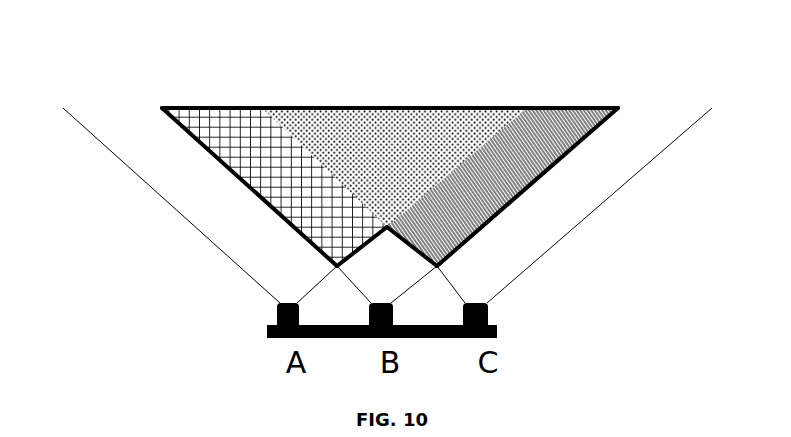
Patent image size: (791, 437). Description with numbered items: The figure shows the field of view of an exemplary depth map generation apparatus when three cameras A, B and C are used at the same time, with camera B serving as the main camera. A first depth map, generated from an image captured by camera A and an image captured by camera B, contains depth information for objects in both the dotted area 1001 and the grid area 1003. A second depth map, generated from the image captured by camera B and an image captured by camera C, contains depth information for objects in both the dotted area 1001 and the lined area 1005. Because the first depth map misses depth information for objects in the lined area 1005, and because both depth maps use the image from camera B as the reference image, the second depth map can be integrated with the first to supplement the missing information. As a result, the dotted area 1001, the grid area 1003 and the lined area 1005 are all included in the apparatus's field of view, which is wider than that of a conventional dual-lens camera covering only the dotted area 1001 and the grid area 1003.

The dotted area 1001 is at (413, 125).
The grid area 1003 is at (220, 105).
The lined area 1005 is at (577, 107).